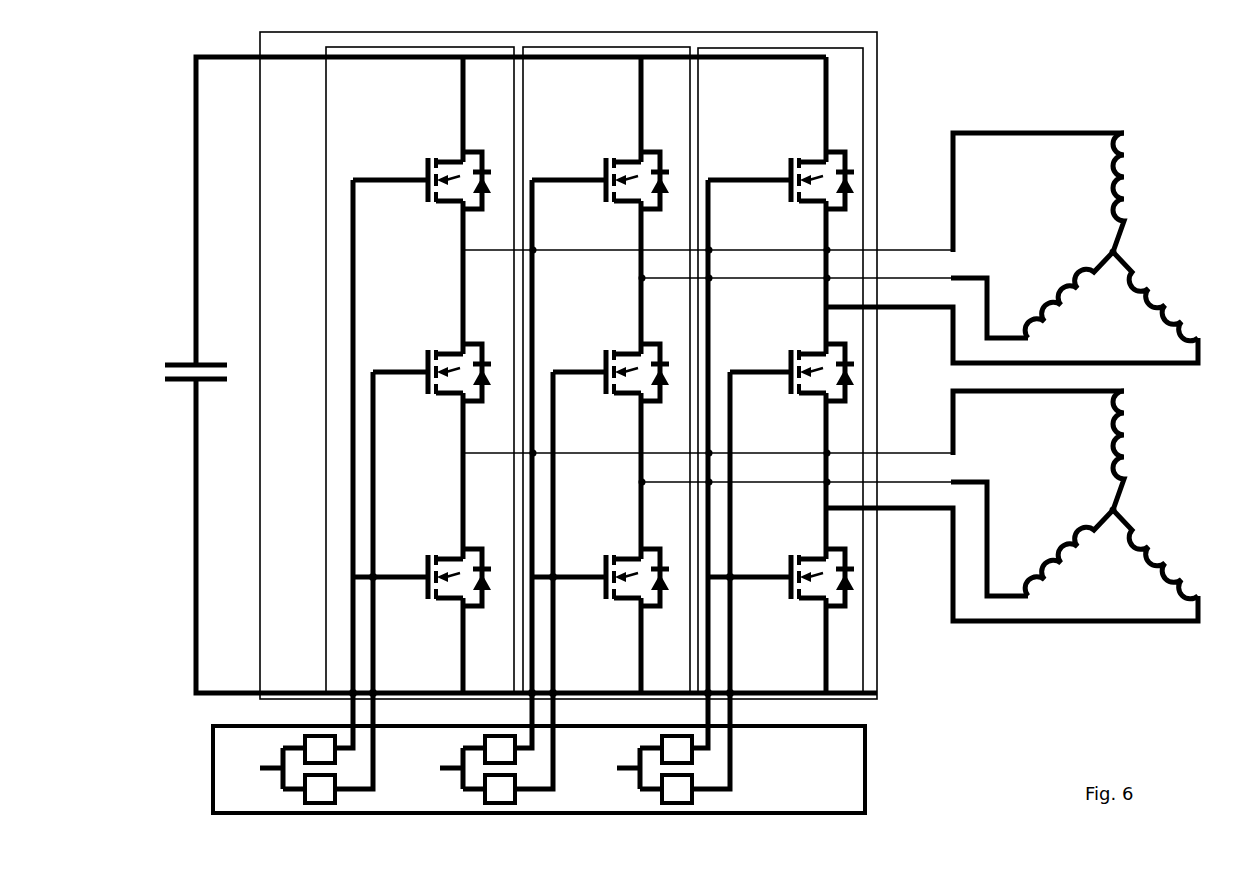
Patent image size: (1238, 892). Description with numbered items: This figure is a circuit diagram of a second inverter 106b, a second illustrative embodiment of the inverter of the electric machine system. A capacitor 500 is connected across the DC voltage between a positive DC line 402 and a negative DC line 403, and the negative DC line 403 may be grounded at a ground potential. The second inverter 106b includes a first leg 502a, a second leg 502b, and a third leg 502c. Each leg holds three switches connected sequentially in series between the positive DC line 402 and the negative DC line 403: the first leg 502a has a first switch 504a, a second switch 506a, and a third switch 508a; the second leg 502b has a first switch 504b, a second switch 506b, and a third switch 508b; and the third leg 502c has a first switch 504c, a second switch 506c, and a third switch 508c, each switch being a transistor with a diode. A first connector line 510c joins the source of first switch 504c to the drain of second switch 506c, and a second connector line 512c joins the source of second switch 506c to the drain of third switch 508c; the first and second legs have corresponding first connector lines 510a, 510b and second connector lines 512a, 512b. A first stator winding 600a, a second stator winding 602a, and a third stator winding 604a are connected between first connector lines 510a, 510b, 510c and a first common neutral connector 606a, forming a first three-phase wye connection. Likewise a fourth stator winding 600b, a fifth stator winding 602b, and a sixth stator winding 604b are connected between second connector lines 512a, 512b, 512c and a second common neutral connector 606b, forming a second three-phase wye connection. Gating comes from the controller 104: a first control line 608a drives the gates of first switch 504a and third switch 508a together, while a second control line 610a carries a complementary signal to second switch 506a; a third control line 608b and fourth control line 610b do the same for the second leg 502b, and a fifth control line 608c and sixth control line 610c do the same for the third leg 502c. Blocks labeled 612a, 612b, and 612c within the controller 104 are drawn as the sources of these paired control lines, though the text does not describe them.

The controller 104 is at (848, 803).
The second inverter 106b is at (313, 685).
The positive DC line 402 is at (215, 60).
The negative DC line 403 is at (233, 689).
The capacitor 500 is at (186, 362).
The first leg 502a is at (384, 90).
The second leg 502b is at (580, 84).
The third leg 502c is at (755, 84).
The first switch of first leg 504a is at (435, 151).
The first switch of second leg 504b is at (613, 151).
The first switch of third leg 504c is at (798, 151).
The second switch of first leg 506a is at (433, 343).
The second switch of second leg 506b is at (611, 343).
The second switch of third leg 506c is at (796, 344).
The third switch of first leg 508a is at (433, 546).
The third switch of second leg 508b is at (611, 546).
The third switch of third leg 508c is at (796, 548).
The first connector line of first leg 510a is at (910, 245).
The first connector line of second leg 510b is at (972, 275).
The first connector line of third leg 510c is at (905, 312).
The second connector line of first leg 512a is at (922, 451).
The second connector line of second leg 512b is at (974, 479).
The second connector line of third leg 512c is at (908, 513).
The first stator winding 600a is at (1130, 183).
The fourth stator winding 600b is at (1130, 441).
The second stator winding 602a is at (1058, 287).
The fifth stator winding 602b is at (1060, 545).
The third stator winding 604a is at (1150, 287).
The sixth stator winding 604b is at (1150, 545).
The first common neutral connector 606a is at (1118, 249).
The second common neutral connector 606b is at (1118, 507).
The first control line 608a is at (352, 711).
The third control line 608b is at (531, 710).
The fifth control line 608c is at (707, 710).
The second control line 610a is at (378, 718).
The fourth control line 610b is at (553, 718).
The sixth control line 610c is at (730, 717).
The first control signal input 612a is at (270, 772).
The second control signal input 612b is at (437, 772).
The third control signal input 612c is at (617, 770).